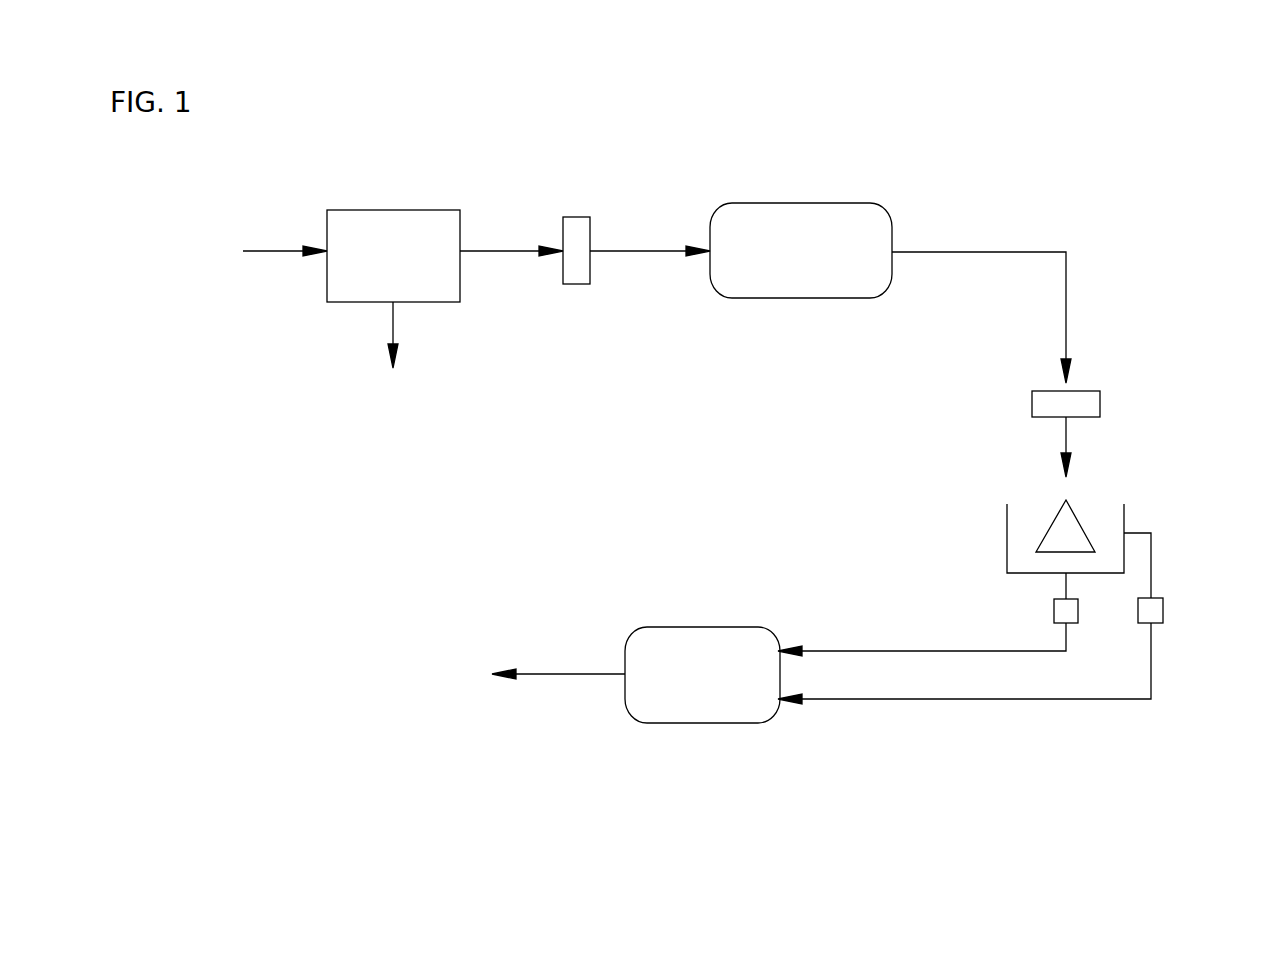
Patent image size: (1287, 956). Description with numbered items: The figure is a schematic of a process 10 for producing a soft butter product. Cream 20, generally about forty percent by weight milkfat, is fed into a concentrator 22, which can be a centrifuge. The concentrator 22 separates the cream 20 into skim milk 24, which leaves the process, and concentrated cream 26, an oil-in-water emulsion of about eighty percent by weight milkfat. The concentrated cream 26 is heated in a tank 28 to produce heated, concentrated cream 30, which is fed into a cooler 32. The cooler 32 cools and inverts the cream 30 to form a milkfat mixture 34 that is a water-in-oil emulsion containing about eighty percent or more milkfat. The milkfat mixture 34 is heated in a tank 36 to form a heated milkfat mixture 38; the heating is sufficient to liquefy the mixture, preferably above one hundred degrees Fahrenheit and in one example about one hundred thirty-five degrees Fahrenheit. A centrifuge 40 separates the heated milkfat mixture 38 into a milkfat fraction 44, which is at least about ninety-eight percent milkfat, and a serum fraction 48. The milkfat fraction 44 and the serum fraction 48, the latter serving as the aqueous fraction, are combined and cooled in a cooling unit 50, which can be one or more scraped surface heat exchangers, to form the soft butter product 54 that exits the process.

The process 10 is at (680, 142).
The cream 20 is at (263, 248).
The concentrator 22 is at (370, 210).
The skim milk 24 is at (395, 351).
The concentrated cream 26 is at (500, 248).
The tank 28 is at (577, 217).
The heated, concentrated cream 30 is at (643, 248).
The cooler 32 is at (802, 203).
The milkfat mixture 34 is at (1017, 252).
The tank 36 is at (1100, 402).
The heated milkfat mixture 38 is at (1066, 438).
The centrifuge 40 is at (1075, 515).
The milkfat fraction 44 is at (1053, 612).
The serum fraction 48 is at (1163, 610).
The cooling unit 50 is at (677, 627).
The butter product 54 is at (548, 673).